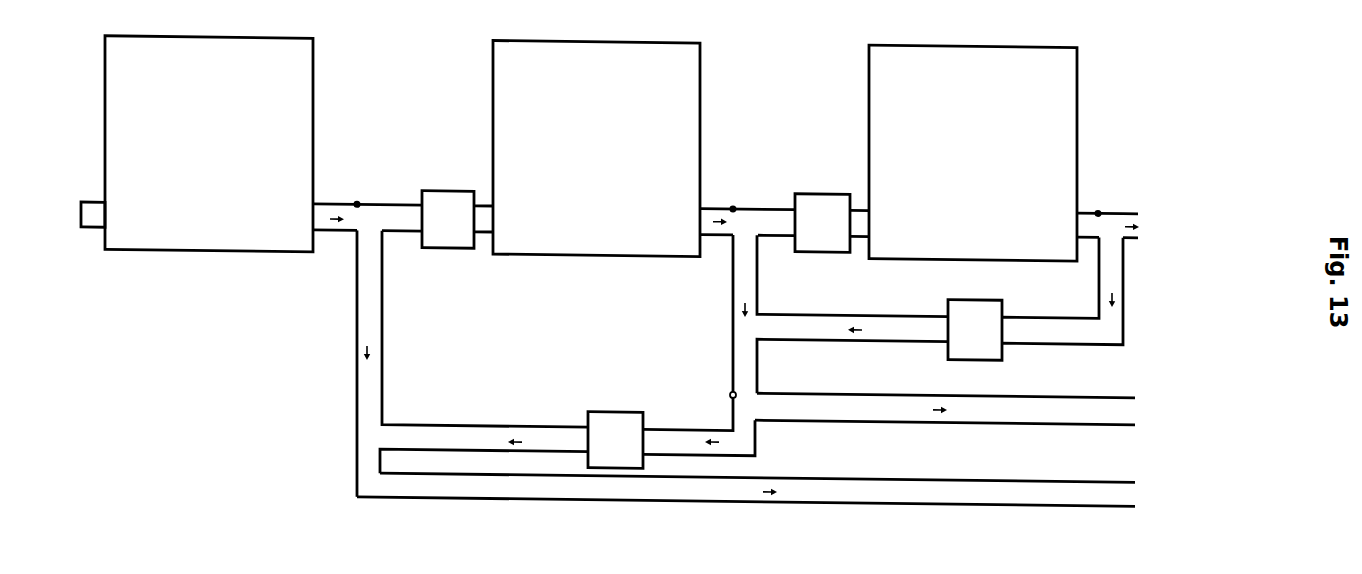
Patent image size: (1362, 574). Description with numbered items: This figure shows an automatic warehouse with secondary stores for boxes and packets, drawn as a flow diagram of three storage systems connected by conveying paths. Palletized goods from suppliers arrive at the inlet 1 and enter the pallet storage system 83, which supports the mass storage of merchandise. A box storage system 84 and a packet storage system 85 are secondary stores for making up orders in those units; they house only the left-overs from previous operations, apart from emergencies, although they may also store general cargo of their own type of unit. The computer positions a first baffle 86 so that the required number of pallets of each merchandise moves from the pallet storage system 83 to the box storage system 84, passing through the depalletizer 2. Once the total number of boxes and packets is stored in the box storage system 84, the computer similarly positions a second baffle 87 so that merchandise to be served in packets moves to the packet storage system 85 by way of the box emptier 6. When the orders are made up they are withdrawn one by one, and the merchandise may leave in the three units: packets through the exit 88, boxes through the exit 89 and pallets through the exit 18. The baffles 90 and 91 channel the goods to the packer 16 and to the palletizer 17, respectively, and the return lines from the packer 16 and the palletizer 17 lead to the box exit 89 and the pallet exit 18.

The inlet 1 is at (74, 213).
The depalletizer 2 is at (448, 220).
The box emptier 6 is at (822, 223).
The packer 16 is at (975, 330).
The palletizer 17 is at (615, 440).
The exit 18 is at (766, 492).
The pallet storage system 83 is at (209, 144).
The box storage system 84 is at (596, 149).
The packet storage system 85 is at (973, 153).
The first baffle 86 is at (378, 224).
The second baffle 87 is at (755, 223).
The exit 88 is at (1159, 231).
The exit 89 is at (963, 404).
The baffle 90 is at (1120, 224).
The baffle 91 is at (752, 406).